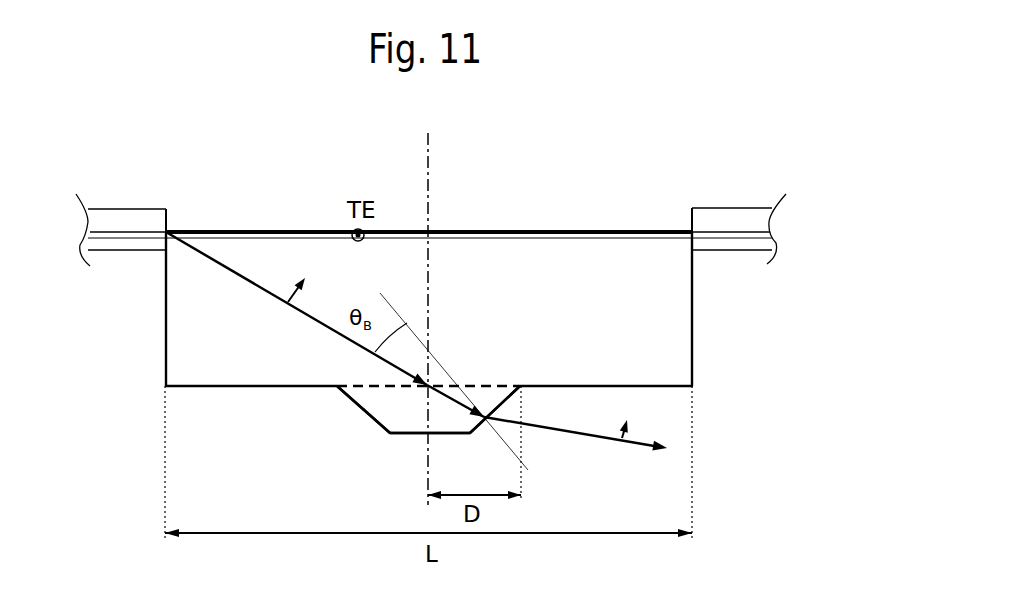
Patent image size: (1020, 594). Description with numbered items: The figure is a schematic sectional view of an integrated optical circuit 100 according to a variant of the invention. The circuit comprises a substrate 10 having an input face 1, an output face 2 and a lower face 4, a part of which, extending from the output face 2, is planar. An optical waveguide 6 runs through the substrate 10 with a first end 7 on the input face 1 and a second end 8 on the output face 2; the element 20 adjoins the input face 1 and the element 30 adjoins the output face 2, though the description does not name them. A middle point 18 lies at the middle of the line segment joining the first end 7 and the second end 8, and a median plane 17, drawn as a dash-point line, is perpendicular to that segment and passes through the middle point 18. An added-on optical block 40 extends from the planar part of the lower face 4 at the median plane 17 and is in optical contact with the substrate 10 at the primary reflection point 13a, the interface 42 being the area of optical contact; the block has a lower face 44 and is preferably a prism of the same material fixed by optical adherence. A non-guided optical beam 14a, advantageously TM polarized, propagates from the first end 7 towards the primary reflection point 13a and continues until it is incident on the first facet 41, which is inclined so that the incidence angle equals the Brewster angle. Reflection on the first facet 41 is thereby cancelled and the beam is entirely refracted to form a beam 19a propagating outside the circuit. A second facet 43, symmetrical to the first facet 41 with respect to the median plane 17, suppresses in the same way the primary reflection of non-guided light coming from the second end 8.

The integrated optical circuit 100 is at (558, 210).
The input face 1 is at (163, 360).
The output face 2 is at (693, 378).
The lower face 4 is at (220, 387).
The optical waveguide 6 is at (207, 231).
The first end 7 is at (166, 236).
The second end 8 is at (693, 228).
The substrate 10 is at (660, 302).
The primary reflection point 13a is at (427, 385).
The non-guided optical beam 14a is at (275, 293).
The median plane 17 is at (428, 173).
The middle point 18 is at (430, 231).
The refracted beam 19a is at (585, 433).
The left arm 20 is at (93, 223).
The right arm 30 is at (757, 210).
The optical block 40 is at (363, 430).
The first facet 41 is at (518, 392).
The interface 42 is at (373, 400).
The second facet 43 is at (390, 417).
The lower face of the optical block 44 is at (408, 433).